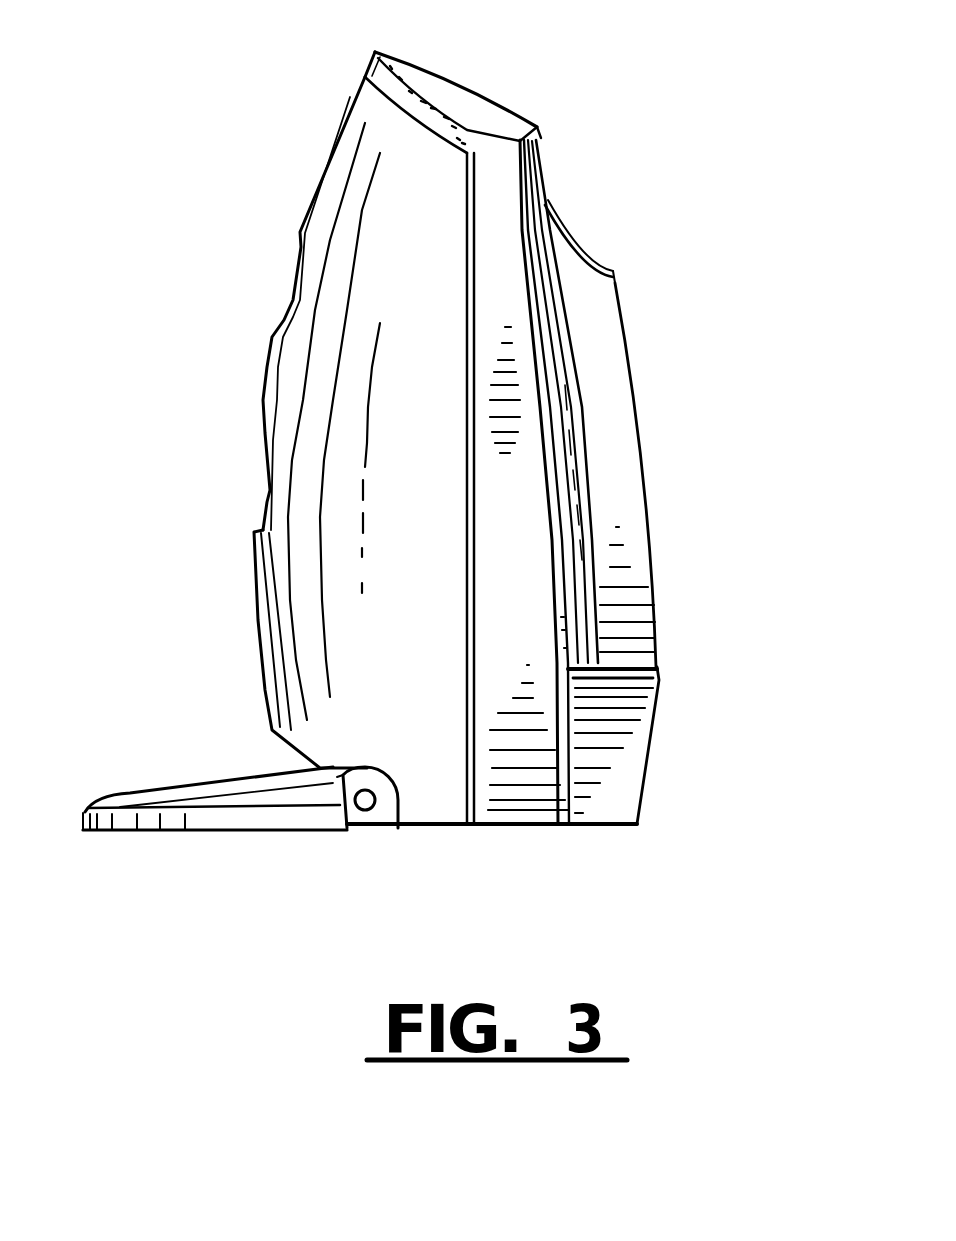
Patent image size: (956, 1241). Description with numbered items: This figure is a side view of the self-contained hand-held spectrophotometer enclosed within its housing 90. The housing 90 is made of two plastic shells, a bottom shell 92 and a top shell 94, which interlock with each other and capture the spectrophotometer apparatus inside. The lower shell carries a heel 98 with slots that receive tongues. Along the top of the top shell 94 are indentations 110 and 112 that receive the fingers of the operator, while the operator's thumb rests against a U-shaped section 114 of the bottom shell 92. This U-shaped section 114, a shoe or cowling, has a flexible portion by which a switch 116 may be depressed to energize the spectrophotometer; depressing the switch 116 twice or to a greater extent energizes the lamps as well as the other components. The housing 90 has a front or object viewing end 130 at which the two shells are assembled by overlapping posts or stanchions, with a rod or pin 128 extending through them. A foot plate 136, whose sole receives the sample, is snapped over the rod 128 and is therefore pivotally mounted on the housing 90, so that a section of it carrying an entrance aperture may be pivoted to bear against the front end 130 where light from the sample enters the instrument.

The housing 90 is at (210, 441).
The bottom shell 92 is at (542, 192).
The top shell 94 is at (362, 168).
The heel 98 is at (428, 73).
The indentation 110 is at (265, 502).
The indentation 112 is at (292, 293).
The U-shaped section 114 is at (630, 562).
The switch 116 is at (623, 750).
The rod or pin 128 is at (361, 828).
The front or object viewing end 130 is at (520, 797).
The foot plate 136 is at (187, 783).